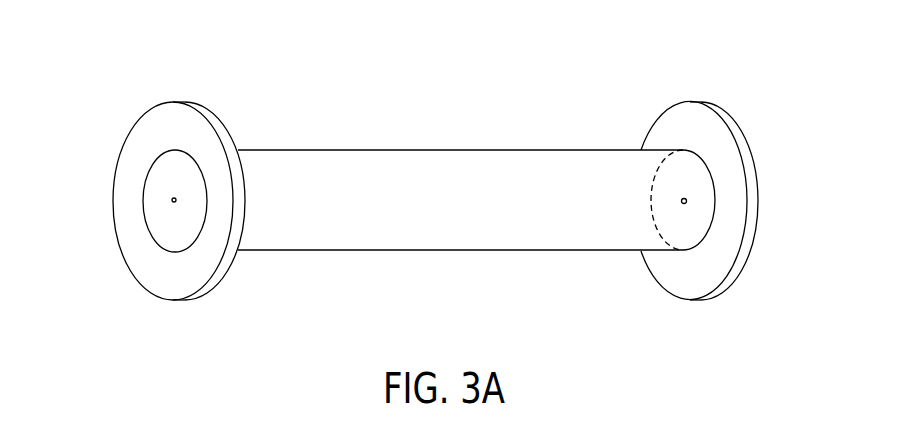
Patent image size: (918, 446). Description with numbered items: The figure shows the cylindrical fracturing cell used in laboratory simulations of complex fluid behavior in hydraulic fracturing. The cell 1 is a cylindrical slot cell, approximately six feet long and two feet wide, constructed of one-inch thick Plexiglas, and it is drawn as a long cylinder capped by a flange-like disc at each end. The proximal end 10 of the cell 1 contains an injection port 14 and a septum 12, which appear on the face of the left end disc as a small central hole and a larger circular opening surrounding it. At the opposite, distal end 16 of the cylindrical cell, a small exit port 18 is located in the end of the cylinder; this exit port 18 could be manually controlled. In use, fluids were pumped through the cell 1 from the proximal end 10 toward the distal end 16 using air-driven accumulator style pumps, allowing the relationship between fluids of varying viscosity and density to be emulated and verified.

The cell 1 is at (417, 112).
The proximal end 10 is at (192, 88).
The septum 12 is at (172, 235).
The injection port 14 is at (170, 200).
The distal end 16 is at (712, 97).
The exit port 18 is at (686, 203).